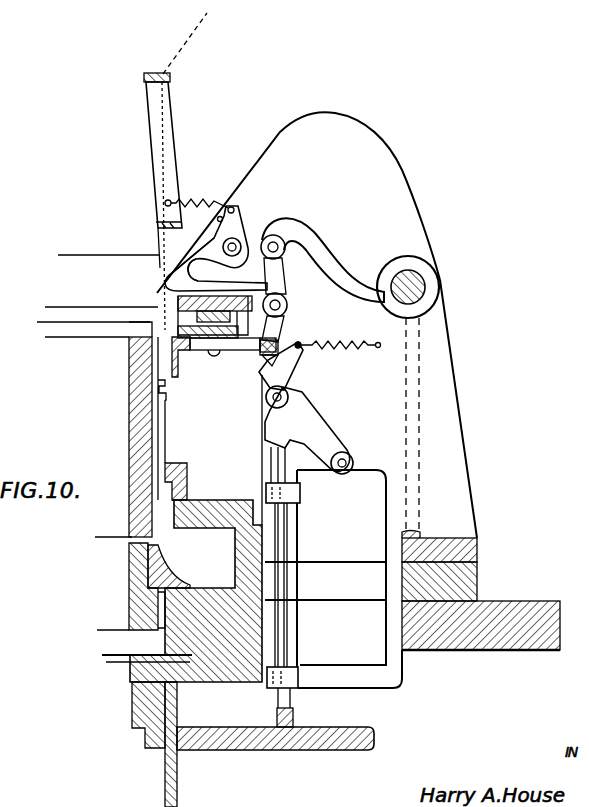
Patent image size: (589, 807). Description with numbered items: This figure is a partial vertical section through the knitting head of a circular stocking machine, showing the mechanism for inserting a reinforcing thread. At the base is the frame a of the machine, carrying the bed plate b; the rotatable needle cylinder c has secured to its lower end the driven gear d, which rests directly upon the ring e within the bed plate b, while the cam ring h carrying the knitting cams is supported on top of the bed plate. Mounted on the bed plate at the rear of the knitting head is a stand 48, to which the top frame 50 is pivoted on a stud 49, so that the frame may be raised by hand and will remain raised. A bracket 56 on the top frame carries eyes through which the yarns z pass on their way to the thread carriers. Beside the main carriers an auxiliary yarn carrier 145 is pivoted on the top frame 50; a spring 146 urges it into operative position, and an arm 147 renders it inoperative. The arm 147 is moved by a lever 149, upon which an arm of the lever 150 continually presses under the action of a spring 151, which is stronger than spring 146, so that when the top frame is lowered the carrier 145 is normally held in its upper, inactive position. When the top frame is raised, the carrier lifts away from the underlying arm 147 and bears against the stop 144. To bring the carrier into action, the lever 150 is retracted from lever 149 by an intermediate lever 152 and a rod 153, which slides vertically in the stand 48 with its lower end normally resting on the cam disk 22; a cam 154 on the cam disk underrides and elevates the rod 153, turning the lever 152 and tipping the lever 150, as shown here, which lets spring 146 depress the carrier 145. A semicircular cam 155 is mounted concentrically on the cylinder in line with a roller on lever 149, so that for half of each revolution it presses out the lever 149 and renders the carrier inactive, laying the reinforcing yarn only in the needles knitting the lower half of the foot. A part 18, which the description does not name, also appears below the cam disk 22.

The yarns z is at (178, 50).
The bracket 56 is at (148, 148).
The spring 146 is at (200, 203).
The stop 144 is at (216, 219).
The arm 147 is at (246, 264).
The auxiliary yarn carrier 145 is at (175, 271).
The top frame 50 is at (400, 174).
The stand 48 is at (446, 456).
The stud 49 is at (420, 289).
The lever 149 is at (292, 277).
The spring 151 is at (341, 344).
The semicircular cam 155 is at (234, 353).
The lever 150 is at (264, 378).
The intermediate lever 152 is at (310, 442).
The rod 153 is at (292, 556).
The cam 154 is at (294, 717).
The bed plate b is at (466, 587).
The frame a is at (528, 653).
The needle cylinder c is at (164, 441).
The cam ring h is at (215, 502).
The driven gear d is at (162, 605).
The ring e is at (150, 650).
The post 18 is at (180, 790).
The cam disk 22 is at (374, 740).